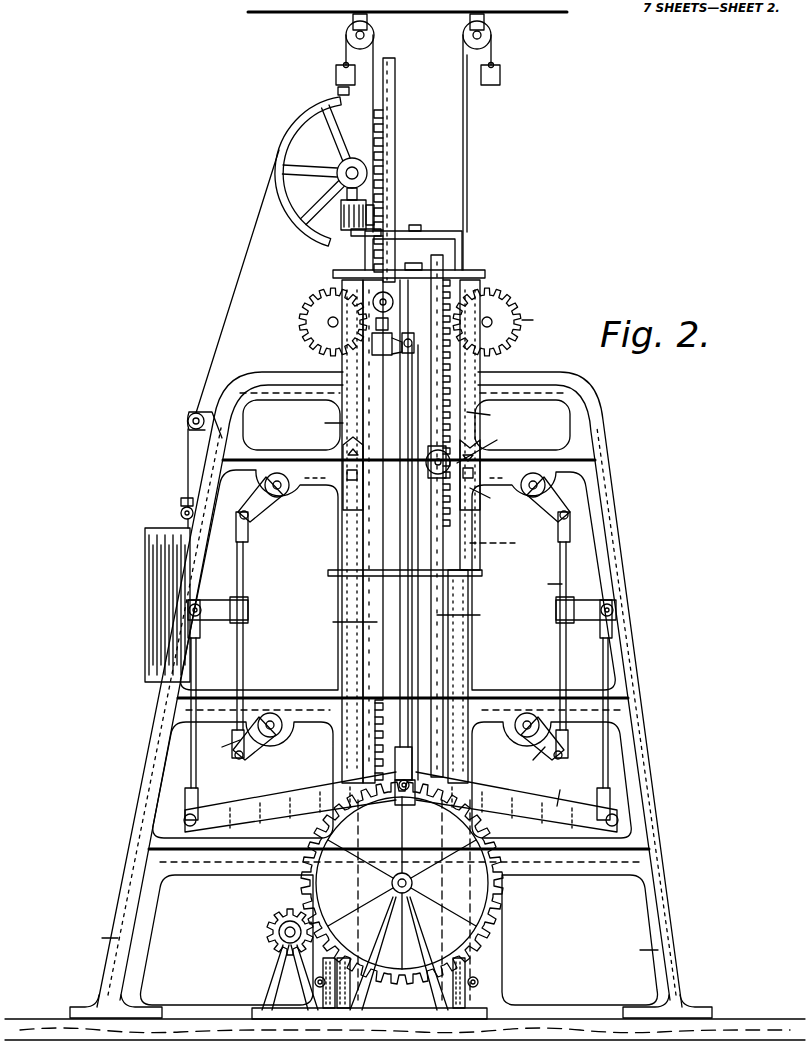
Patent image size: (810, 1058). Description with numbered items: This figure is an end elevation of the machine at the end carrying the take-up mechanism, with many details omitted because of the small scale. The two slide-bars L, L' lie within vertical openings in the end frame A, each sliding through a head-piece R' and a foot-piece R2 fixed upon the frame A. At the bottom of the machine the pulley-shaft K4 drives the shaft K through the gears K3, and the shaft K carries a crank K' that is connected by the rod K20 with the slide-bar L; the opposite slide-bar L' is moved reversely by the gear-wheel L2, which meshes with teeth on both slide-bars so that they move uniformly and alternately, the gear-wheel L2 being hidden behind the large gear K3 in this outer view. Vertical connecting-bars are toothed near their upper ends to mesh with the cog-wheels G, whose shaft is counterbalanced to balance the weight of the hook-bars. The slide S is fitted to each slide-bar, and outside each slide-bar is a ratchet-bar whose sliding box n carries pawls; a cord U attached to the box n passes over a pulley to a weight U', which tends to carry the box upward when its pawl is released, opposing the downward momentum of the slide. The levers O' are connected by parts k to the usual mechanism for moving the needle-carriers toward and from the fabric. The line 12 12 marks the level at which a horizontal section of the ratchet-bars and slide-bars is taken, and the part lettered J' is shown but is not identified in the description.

The end frame A is at (598, 414).
The cog-wheel G is at (300, 322).
The slide S is at (343, 283).
The slide-bar L is at (463, 497).
The opposite slide-bar L' is at (363, 420).
The gear-wheel L2 is at (358, 880).
The cord U is at (418, 152).
The weight U' is at (438, 77).
The sector wheel J' is at (319, 175).
The head-piece R' is at (431, 275).
The foot-piece R2 is at (328, 573).
The sliding box n is at (343, 500).
The connecting parts k is at (262, 514).
The section line 12 is at (342, 543).
The shaft K is at (414, 896).
The crank K' is at (447, 779).
The gears K3 is at (480, 944).
The pulley-shaft K4 is at (280, 932).
The connecting rod K20 is at (407, 657).
The levers O' is at (401, 798).